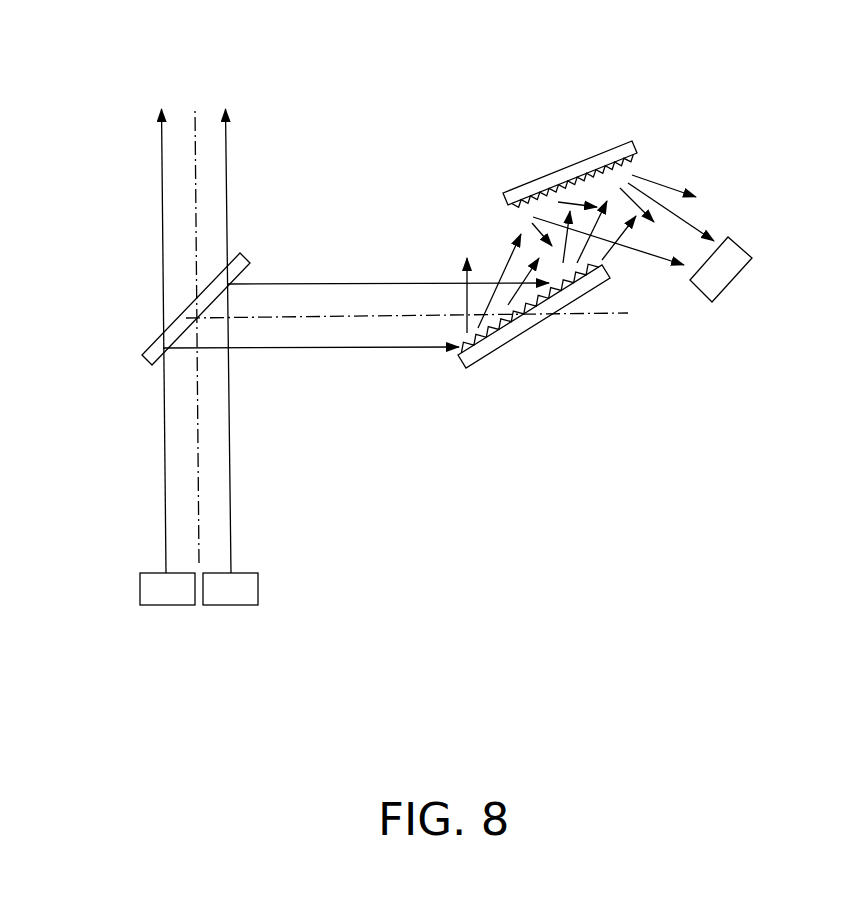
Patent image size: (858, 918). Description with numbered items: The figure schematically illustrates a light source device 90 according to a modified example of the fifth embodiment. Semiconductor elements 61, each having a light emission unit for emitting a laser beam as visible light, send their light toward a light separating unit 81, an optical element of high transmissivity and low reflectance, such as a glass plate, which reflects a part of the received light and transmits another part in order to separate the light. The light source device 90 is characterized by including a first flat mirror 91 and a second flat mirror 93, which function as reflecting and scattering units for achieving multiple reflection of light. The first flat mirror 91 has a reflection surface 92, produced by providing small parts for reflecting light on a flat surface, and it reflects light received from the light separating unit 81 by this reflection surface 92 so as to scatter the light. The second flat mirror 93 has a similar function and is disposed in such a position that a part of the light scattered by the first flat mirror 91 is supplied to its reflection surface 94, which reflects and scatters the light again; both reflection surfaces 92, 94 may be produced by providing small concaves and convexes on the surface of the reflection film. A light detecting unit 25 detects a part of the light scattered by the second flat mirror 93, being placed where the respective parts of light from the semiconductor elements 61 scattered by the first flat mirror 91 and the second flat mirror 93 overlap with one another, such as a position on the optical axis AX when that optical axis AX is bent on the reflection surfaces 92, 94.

The light source device 90 is at (361, 104).
The semiconductor elements 61 is at (173, 605).
The light separating unit 81 is at (143, 351).
The optical axis AX is at (403, 321).
The first flat mirror 91 is at (527, 334).
The reflection surface 92 is at (456, 356).
The second flat mirror 93 is at (598, 160).
The reflection surface 94 is at (636, 157).
The light detecting unit 25 is at (722, 268).